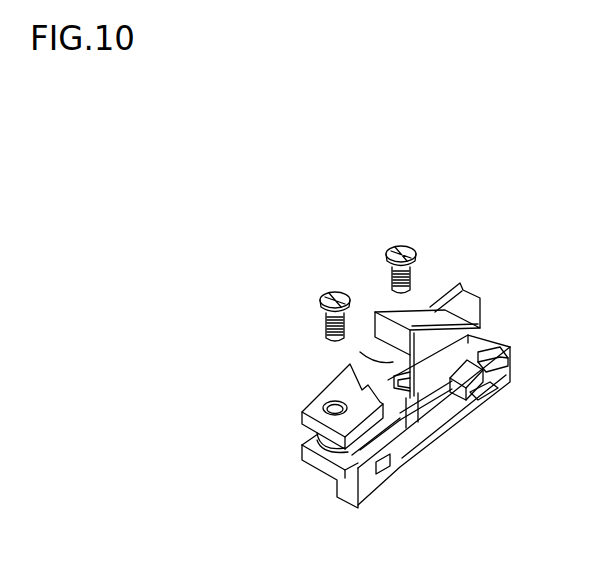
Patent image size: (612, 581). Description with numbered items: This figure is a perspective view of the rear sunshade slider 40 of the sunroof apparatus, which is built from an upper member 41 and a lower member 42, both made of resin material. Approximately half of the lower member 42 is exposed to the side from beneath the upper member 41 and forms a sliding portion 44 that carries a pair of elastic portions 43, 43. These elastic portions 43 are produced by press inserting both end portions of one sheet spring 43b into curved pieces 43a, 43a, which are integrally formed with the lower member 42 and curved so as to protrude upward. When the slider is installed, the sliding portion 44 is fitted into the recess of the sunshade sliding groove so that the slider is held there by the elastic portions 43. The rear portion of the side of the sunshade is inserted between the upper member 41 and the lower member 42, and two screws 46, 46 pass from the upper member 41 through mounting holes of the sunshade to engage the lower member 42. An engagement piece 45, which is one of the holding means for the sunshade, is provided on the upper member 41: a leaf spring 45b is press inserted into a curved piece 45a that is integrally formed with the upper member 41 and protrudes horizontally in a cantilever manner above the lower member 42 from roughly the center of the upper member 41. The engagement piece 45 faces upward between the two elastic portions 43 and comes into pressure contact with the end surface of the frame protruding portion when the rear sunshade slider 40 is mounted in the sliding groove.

The rear sunshade slider 40 is at (478, 275).
The upper member 41 is at (313, 401).
The lower member 42 is at (314, 469).
The elastic portion 43 is at (483, 380).
The curved piece 43a is at (486, 340).
The sheet spring 43b is at (487, 398).
The sliding portion 44 is at (444, 428).
The engagement piece 45 is at (428, 430).
The curved piece 45a is at (414, 436).
The leaf spring 45b is at (397, 386).
The screw 46 is at (336, 291).